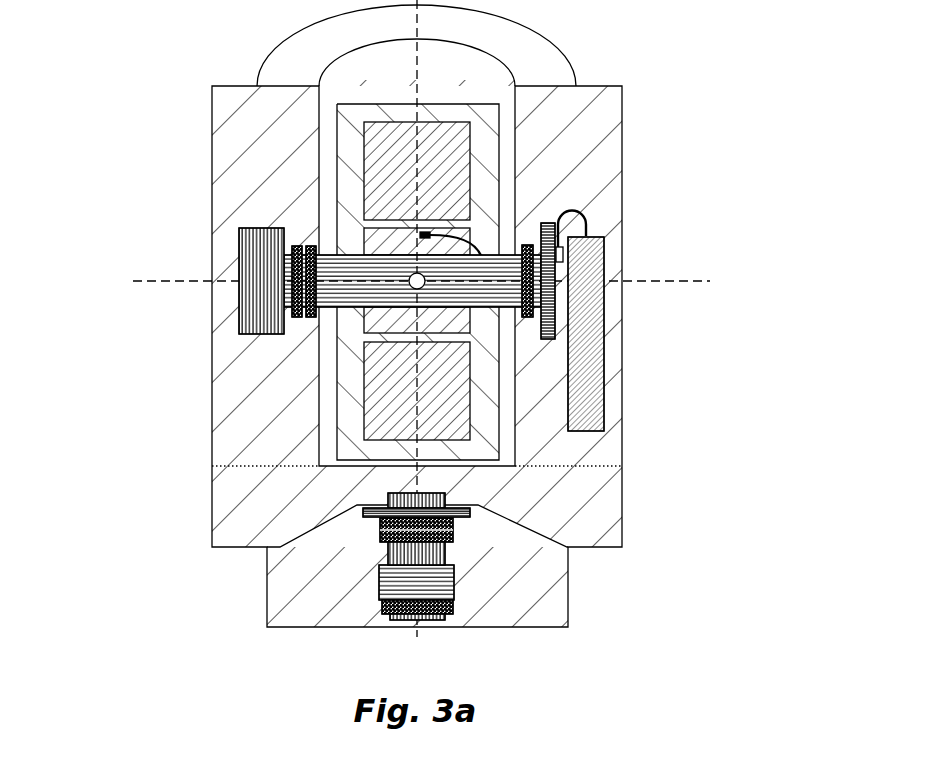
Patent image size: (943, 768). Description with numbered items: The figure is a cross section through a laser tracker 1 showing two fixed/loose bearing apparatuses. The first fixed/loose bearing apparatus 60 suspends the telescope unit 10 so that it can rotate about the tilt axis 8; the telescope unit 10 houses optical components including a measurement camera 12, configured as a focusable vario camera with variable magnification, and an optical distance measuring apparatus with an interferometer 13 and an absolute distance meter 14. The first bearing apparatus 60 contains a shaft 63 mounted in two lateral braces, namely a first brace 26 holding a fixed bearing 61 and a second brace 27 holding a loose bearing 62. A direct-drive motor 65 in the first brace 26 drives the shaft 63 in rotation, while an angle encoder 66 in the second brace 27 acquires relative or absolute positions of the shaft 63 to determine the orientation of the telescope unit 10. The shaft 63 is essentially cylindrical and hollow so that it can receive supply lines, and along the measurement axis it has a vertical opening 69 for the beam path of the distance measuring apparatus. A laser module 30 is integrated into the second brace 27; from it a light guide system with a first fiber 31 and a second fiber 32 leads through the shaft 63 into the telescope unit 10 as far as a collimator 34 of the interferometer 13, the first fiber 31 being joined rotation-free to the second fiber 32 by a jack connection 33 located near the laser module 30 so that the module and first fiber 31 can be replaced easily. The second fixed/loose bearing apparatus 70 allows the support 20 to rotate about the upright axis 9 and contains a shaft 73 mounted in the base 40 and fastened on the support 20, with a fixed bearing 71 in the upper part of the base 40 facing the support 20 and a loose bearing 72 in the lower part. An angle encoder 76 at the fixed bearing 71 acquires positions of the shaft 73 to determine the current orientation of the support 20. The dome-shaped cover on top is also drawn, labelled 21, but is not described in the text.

The laser tracker 1 is at (170, 64).
The measurement camera 12 is at (385, 157).
The first brace 26 is at (252, 152).
The telescope unit 10 is at (345, 194).
The interferometer 13 is at (382, 237).
The direct-drive motor 65 is at (240, 268).
The fixed bearing 61 is at (297, 287).
The shaft 63 is at (311, 317).
The first fixed/loose bearing apparatus 60 is at (410, 287).
The vertical opening 69 is at (350, 318).
The second fixed/loose bearing apparatus 70 is at (363, 538).
The shaft 73 is at (405, 554).
The base 40 is at (280, 585).
The angle encoder 76 is at (470, 515).
The loose bearing 72 is at (380, 610).
The dome cover 21 is at (548, 53).
The second brace 27 is at (587, 117).
The collimator 34 is at (430, 235).
The second fiber 32 is at (465, 237).
The first fiber 31 is at (586, 223).
The angle encoder 66 is at (552, 247).
The tilt axis 8 is at (647, 281).
The jack connection 33 is at (558, 262).
The loose bearing 62 is at (542, 307).
The laser module 30 is at (590, 387).
The absolute distance meter 14 is at (448, 428).
The support 20 is at (557, 485).
The upright axis 9 is at (568, 547).
The fixed bearing 71 is at (448, 530).